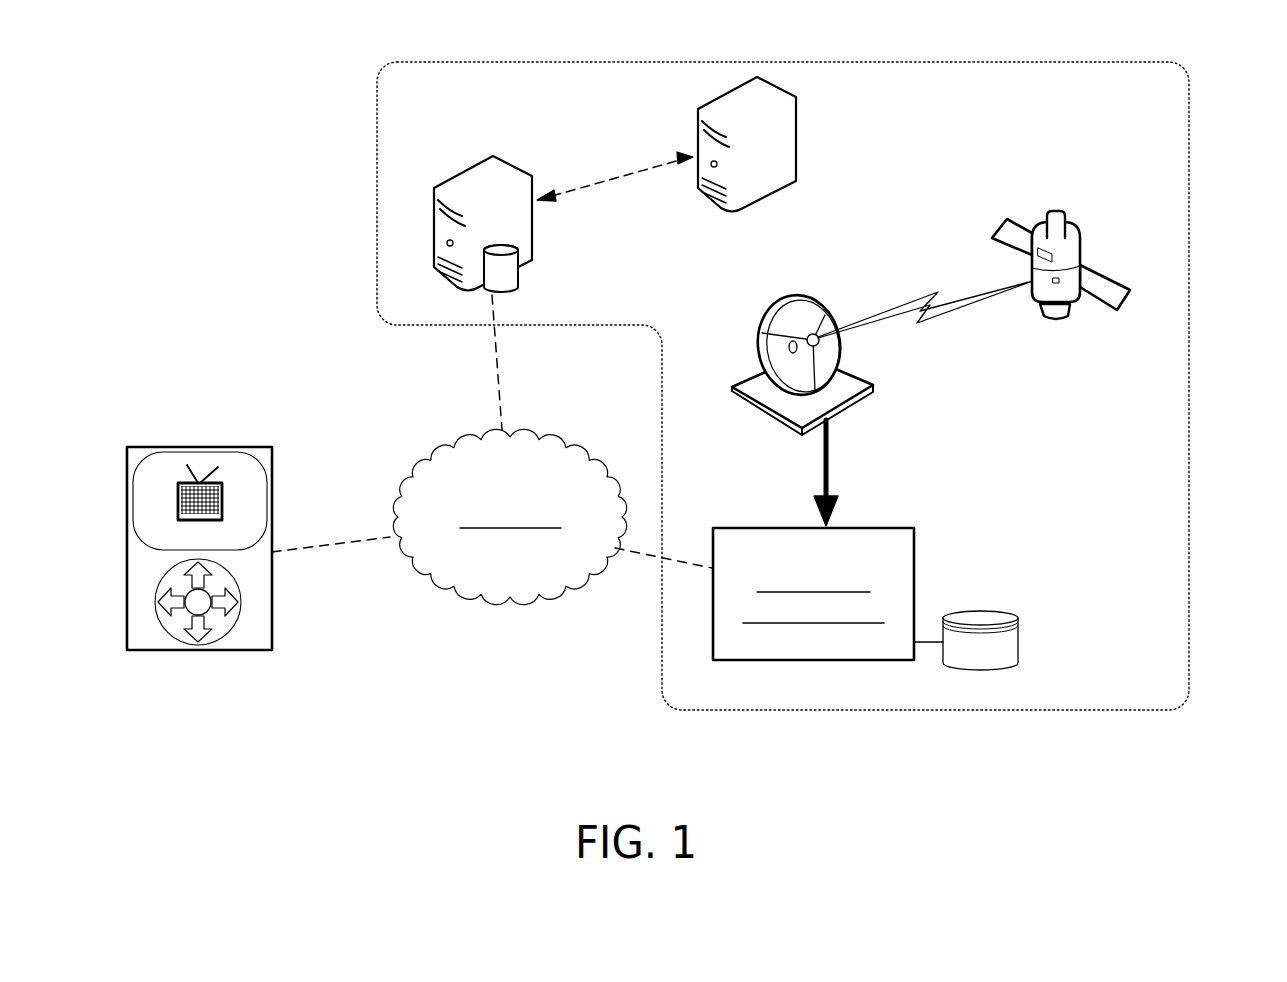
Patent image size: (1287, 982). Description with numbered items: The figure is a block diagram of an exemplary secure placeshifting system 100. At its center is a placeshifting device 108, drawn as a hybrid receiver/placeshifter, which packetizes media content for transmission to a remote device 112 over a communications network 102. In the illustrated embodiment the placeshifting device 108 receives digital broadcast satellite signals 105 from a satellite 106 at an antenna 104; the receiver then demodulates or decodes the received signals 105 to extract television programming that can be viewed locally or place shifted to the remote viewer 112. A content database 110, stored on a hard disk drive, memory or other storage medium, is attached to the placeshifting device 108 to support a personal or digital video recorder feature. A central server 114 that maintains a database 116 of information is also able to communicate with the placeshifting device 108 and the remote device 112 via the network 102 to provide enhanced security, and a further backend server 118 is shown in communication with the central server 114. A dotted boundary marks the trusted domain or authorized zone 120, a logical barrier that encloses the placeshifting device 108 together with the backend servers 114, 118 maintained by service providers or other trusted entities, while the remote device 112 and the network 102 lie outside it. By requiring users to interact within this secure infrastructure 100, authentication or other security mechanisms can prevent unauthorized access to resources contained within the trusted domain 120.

The placeshifting system 100 is at (195, 128).
The communications network 102 is at (531, 585).
The antenna 104 is at (830, 410).
The received signals 105 is at (830, 463).
The satellite 106 is at (1070, 254).
The placeshifting device 108 is at (895, 658).
The content database 110 is at (1010, 648).
The remote device 112 is at (263, 608).
The central server 114 is at (523, 230).
The database 116 is at (513, 280).
The backend server 118 is at (788, 156).
The trusted domain 120 is at (1189, 424).